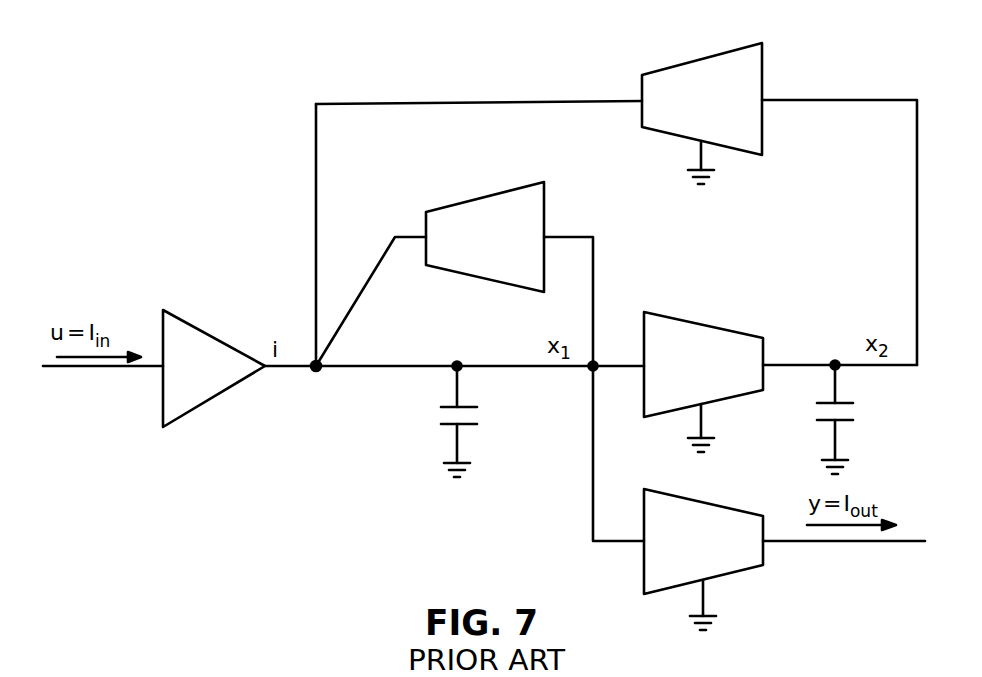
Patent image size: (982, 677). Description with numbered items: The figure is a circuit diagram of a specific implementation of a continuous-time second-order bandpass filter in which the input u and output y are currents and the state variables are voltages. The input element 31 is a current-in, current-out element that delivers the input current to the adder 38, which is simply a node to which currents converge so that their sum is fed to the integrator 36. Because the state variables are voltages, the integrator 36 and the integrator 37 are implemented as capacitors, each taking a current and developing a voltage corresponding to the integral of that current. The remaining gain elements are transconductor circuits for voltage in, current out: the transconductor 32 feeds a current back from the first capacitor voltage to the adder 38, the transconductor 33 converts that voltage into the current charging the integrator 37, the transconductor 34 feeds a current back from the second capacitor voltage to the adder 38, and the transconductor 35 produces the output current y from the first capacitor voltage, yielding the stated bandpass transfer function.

The input element 31 is at (209, 345).
The transconductor circuit 32 is at (482, 205).
The transconductor circuit 33 is at (713, 334).
The transconductor circuit 34 is at (696, 72).
The transconductor circuit 35 is at (719, 565).
The integrator 36 is at (445, 425).
The integrator 37 is at (823, 418).
The adder 38 is at (313, 370).